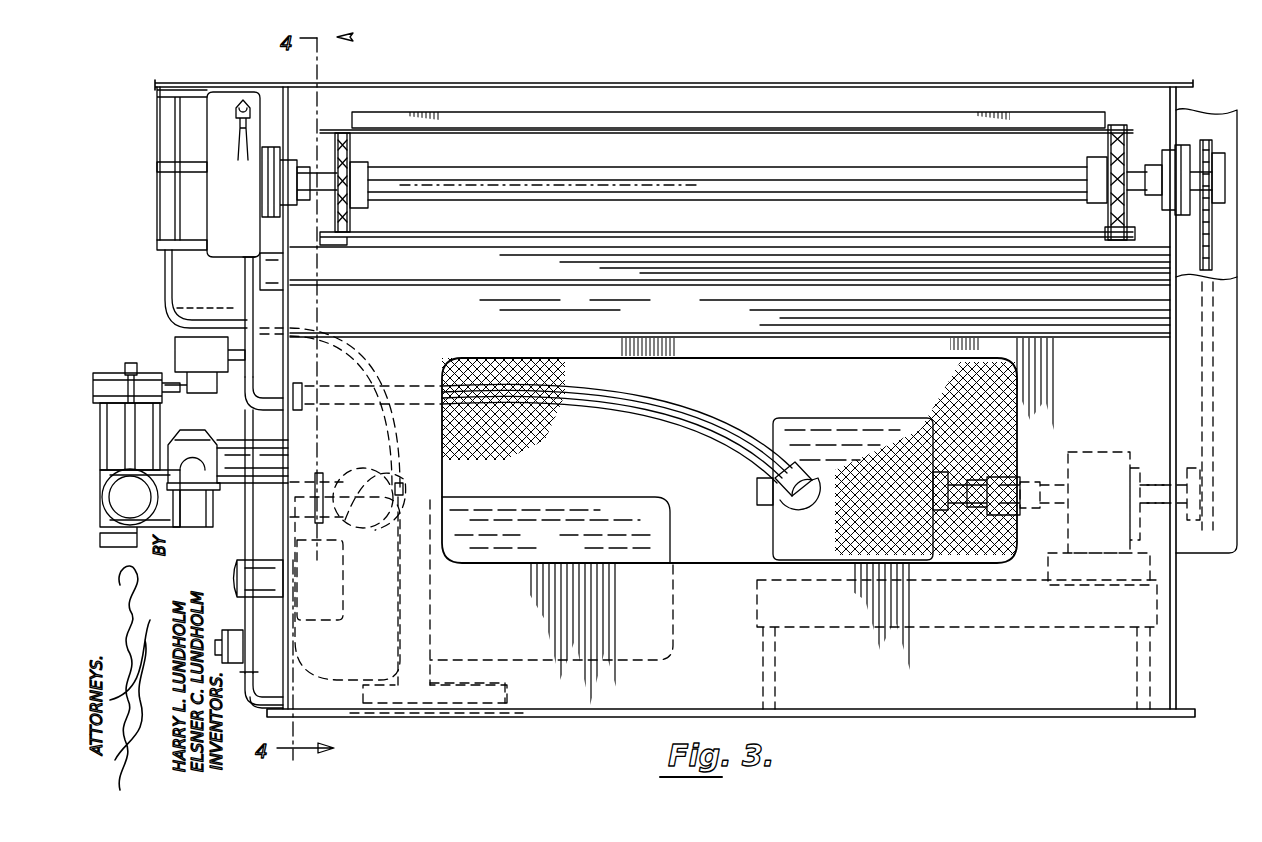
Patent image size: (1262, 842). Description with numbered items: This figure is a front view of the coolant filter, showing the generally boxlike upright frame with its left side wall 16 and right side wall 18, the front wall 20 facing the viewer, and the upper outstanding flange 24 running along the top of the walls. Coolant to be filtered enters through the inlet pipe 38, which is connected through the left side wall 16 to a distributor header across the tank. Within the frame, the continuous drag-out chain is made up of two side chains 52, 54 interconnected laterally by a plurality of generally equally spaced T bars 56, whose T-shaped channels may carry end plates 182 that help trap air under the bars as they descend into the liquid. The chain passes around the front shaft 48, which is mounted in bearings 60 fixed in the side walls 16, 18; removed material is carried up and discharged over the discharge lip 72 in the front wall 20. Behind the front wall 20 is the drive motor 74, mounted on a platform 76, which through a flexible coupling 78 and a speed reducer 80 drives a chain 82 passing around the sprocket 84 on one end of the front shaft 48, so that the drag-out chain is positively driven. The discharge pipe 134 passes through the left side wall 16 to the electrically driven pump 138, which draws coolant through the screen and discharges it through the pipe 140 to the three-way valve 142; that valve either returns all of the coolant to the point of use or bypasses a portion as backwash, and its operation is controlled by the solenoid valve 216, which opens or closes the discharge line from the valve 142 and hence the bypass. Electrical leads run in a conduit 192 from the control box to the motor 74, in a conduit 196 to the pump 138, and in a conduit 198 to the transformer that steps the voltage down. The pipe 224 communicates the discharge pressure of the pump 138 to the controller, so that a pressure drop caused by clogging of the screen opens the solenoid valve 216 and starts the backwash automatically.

The left side wall 16 is at (268, 683).
The right side wall 18 is at (1177, 645).
The front wall 20 is at (612, 700).
The upper outstanding flange 24 is at (347, 83).
The inlet pipe 38 is at (197, 82).
The front drive shaft 48 is at (1133, 172).
The side chain 52 is at (1105, 138).
The side chain 54 is at (357, 143).
The T bars 56 is at (470, 112).
The bearings 60 is at (275, 147).
The discharge lip 72 is at (1063, 330).
The drive motor 74 is at (875, 418).
The platform 76 is at (757, 615).
The flexible coupling 78 is at (1000, 477).
The speed reducer 80 is at (1107, 452).
The chain 82 is at (1210, 247).
The sprocket 84 is at (1218, 153).
The discharge pipe 134 is at (237, 460).
The pump 138 is at (546, 497).
The discharge pipe 140 is at (122, 492).
The three-way valve 142 is at (145, 375).
The end plates 182 is at (352, 237).
The conduit 192 is at (250, 287).
The conduit 196 is at (598, 398).
The conduit 198 is at (268, 703).
The solenoid valve 216 is at (177, 337).
The pipe 224 is at (363, 448).